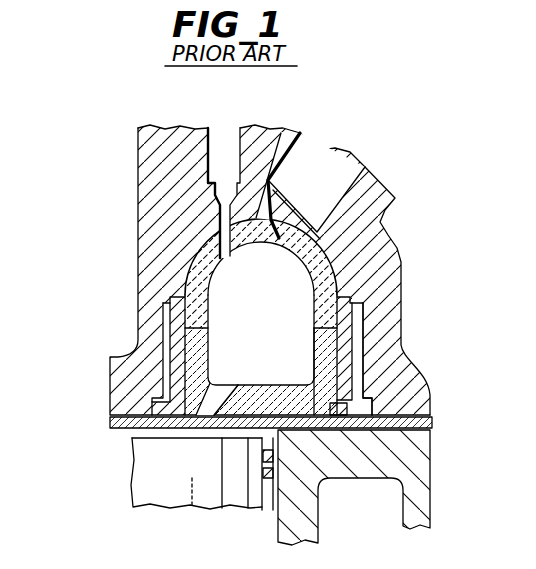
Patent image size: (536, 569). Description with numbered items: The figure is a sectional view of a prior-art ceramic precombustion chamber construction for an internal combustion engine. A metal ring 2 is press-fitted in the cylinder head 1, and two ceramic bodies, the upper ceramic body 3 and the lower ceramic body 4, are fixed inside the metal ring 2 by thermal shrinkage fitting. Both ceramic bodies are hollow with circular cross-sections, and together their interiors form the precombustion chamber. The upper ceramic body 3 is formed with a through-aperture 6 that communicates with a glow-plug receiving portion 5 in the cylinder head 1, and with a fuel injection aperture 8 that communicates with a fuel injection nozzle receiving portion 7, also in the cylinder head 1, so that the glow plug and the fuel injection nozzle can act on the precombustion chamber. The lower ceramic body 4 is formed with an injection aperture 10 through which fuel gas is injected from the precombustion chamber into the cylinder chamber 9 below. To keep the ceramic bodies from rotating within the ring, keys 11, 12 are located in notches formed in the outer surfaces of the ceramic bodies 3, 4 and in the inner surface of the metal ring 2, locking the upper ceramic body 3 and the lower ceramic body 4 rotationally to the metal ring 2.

The cylinder head 1 is at (400, 350).
The metal ring 2 is at (175, 326).
The upper ceramic body 3 is at (322, 263).
The lower ceramic body 4 is at (368, 372).
The glow-plug receiving portion 5 is at (222, 140).
The through-aperture 6 is at (192, 256).
The fuel injection nozzle receiving portion 7 is at (348, 150).
The fuel injection aperture 8 is at (281, 234).
The cylinder chamber 9 is at (132, 431).
The injection aperture 10 is at (248, 393).
The key 11 is at (320, 314).
The key 12 is at (309, 385).